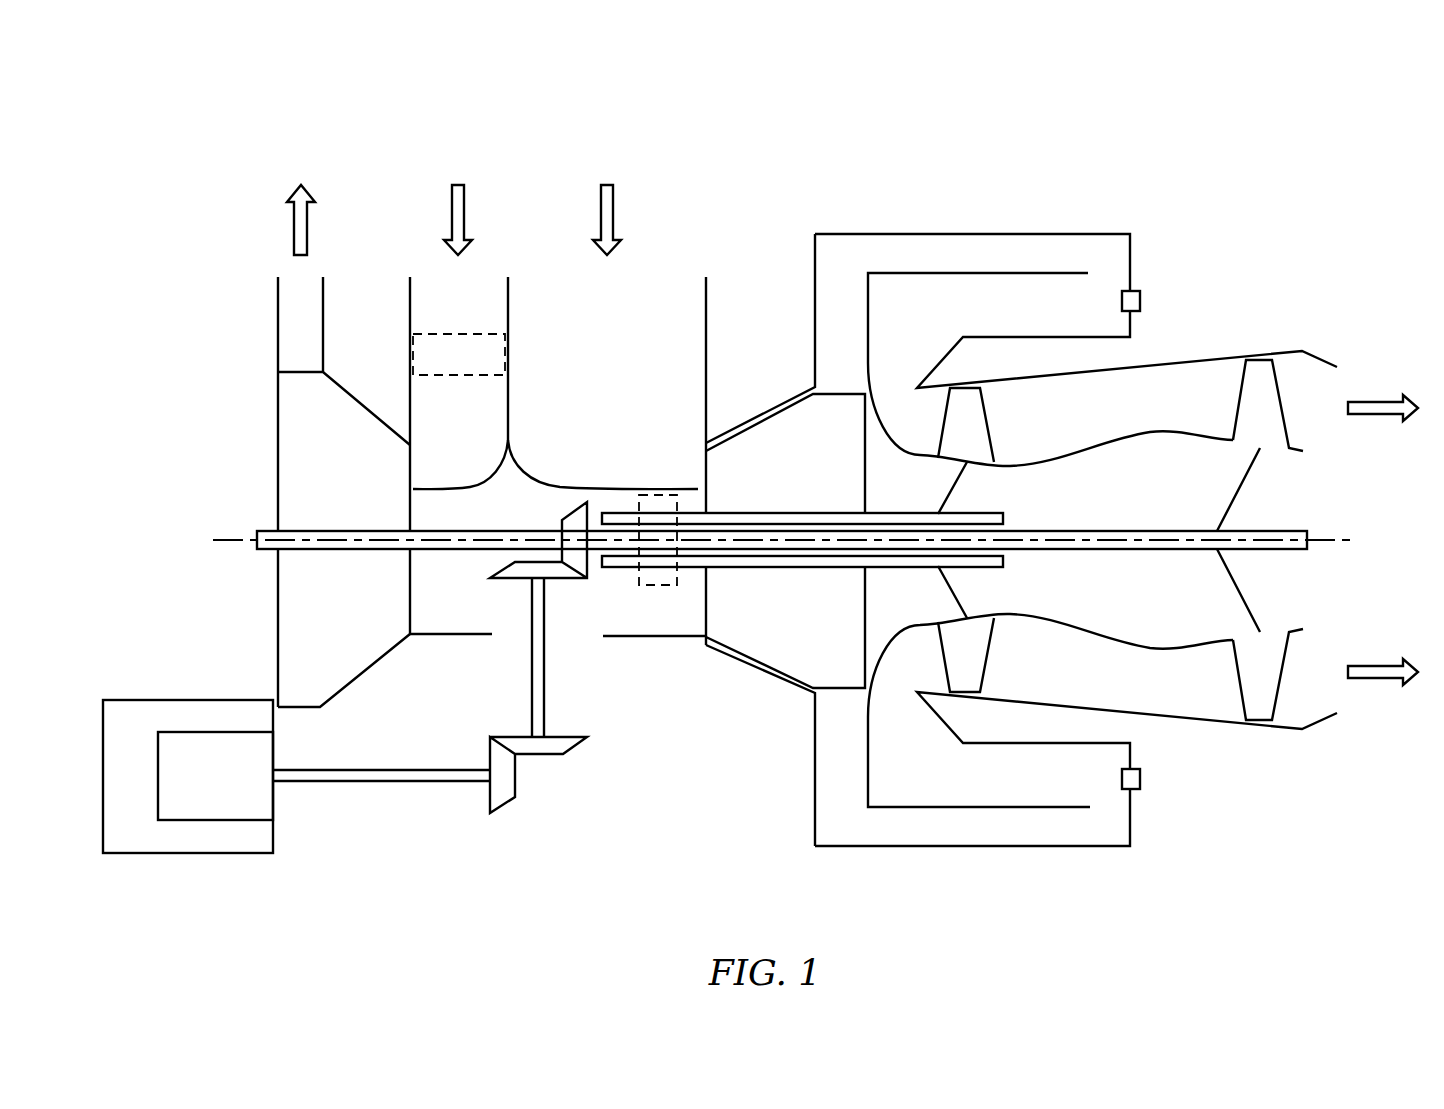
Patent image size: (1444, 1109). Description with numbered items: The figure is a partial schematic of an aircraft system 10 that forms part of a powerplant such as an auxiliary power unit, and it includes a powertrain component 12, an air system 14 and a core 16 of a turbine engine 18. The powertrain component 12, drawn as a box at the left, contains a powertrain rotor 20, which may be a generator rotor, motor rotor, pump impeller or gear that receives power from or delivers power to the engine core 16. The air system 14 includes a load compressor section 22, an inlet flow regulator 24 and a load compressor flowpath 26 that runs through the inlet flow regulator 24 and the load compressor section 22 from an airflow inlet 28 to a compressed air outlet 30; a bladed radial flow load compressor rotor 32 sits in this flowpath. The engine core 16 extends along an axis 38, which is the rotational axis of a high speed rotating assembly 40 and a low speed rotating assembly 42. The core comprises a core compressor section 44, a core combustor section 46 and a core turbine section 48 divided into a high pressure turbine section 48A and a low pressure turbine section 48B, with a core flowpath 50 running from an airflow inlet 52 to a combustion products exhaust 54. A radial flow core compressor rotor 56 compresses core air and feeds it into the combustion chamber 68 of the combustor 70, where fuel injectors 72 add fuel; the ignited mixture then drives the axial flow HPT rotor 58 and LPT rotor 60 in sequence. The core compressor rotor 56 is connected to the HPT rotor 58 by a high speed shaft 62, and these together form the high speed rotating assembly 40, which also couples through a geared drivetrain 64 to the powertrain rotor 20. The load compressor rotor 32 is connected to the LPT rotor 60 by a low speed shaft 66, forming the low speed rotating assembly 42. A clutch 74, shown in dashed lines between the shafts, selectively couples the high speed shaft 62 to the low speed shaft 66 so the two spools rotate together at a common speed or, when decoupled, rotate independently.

The aircraft system 10 is at (176, 133).
The powertrain component 12 is at (140, 686).
The air system 14 is at (243, 307).
The engine core 16 is at (730, 773).
The turbine engine 18 is at (1100, 181).
The powertrain rotor 20 is at (200, 790).
The load compressor section 22 is at (243, 382).
The inlet flow regulator 24 is at (445, 368).
The load compressor flowpath 26 is at (444, 455).
The airflow inlet 28 is at (489, 277).
The compressed air outlet 30 is at (309, 277).
The load compressor rotor 32 is at (323, 487).
The axis 38 is at (214, 565).
The high speed rotating assembly 40 is at (694, 469).
The low speed rotating assembly 42 is at (243, 497).
The core compressor section 44 is at (740, 678).
The core combustor section 46 is at (944, 874).
The core turbine section 48 is at (1208, 809).
The high pressure turbine section 48A is at (932, 704).
The low pressure turbine section 48B is at (1254, 739).
The core flowpath 50 is at (573, 402).
The airflow inlet 52 is at (667, 277).
The combustion products exhaust 54 is at (1337, 383).
The core compressor rotor 56 is at (780, 478).
The high pressure turbine rotor 58 is at (950, 438).
The low pressure turbine rotor 60 is at (1245, 417).
The high speed shaft 62 is at (895, 514).
The drivetrain 64 is at (544, 773).
The low speed shaft 66 is at (457, 530).
The combustion chamber 68 is at (999, 320).
The combustor 70 is at (1000, 273).
The fuel injector 72 is at (1140, 300).
The clutch 74 is at (655, 585).